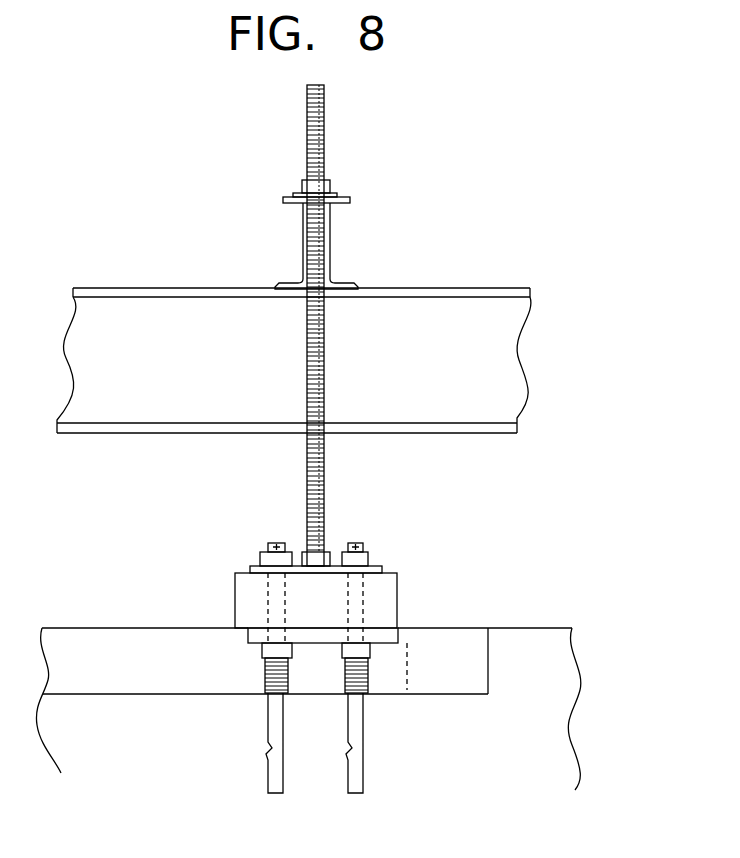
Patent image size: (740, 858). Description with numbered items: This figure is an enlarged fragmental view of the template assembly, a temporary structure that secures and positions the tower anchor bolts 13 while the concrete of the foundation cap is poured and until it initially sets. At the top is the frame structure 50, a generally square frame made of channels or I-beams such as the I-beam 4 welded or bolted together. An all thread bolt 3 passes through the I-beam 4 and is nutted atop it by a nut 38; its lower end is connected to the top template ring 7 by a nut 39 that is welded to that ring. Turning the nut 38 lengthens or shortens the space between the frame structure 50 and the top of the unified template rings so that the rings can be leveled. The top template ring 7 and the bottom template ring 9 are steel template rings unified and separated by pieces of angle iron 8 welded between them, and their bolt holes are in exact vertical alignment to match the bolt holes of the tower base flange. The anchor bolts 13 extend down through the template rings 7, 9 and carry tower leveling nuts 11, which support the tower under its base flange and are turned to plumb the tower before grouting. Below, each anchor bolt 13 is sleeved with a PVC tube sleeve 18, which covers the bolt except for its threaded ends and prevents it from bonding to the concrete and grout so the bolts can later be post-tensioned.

The all thread bolt 3 is at (306, 118).
The nut 38 is at (302, 182).
The frame structure 50 is at (183, 290).
The I-beam 4 is at (150, 420).
The nut 39 is at (325, 552).
The top template ring 7 is at (375, 563).
The angle iron 8 is at (397, 583).
The bottom template ring 9 is at (398, 640).
The tower anchor bolt 13 is at (270, 543).
The tower leveling nut 11 is at (378, 648).
The anchor bolt sleeve 18 is at (363, 730).